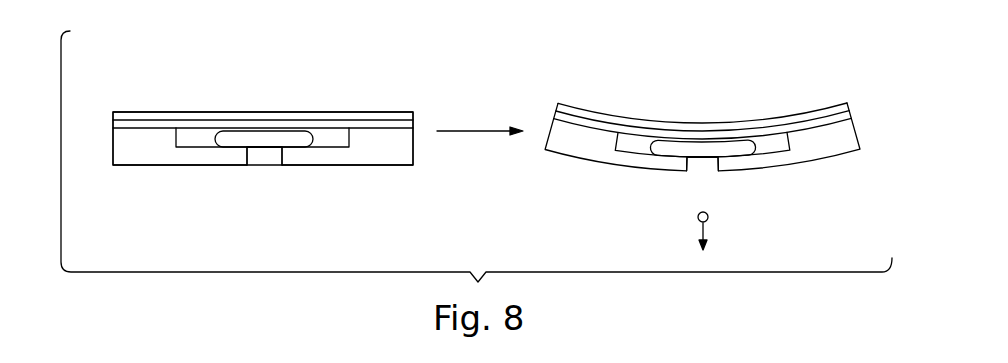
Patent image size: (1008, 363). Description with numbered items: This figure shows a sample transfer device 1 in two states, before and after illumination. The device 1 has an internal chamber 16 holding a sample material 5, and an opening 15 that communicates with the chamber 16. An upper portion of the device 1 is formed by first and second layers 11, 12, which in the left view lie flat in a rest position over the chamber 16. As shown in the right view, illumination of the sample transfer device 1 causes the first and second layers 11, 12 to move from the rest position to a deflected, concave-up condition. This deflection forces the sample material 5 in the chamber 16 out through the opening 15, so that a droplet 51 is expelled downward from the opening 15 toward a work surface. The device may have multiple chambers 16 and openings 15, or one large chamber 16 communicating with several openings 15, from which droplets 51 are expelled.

The sample transfer device 1 is at (183, 72).
The sample material 5 is at (252, 132).
The first layer 11 is at (413, 118).
The second layer 12 is at (114, 126).
The opening 15 is at (266, 167).
The chamber 16 is at (322, 133).
The droplet 51 is at (697, 218).